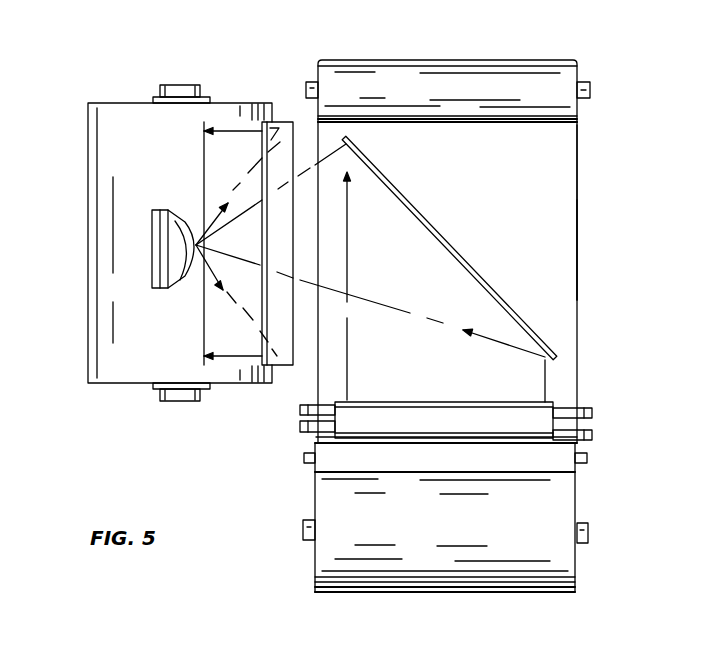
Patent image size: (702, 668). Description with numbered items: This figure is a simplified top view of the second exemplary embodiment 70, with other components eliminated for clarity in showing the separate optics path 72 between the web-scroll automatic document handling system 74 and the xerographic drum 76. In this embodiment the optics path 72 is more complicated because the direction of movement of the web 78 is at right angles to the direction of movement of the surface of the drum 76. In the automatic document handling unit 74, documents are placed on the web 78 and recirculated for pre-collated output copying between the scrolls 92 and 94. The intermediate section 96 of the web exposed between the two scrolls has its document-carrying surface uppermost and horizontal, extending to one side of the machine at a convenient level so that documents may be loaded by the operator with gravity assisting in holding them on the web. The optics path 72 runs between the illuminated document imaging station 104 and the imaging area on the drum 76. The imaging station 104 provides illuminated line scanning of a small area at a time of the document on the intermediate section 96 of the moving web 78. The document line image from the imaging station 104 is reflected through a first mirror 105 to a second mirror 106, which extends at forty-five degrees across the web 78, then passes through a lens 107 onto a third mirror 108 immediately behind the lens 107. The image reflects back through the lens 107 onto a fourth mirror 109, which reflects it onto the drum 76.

The embodiment 70 is at (290, 88).
The optics path 72 is at (347, 340).
The web-scroll automatic document handling system 74 is at (600, 318).
The xerographic drum 76 is at (110, 140).
The web 78 is at (563, 163).
The scroll 92 is at (555, 72).
The scroll 94 is at (565, 575).
The intermediate section of the web 96 is at (558, 208).
The illuminated document imaging station 104 is at (645, 432).
The first mirror 105 is at (470, 405).
The second mirror 106 is at (403, 193).
The lens 107 is at (198, 230).
The third mirror 108 is at (153, 262).
The fourth mirror 109 is at (290, 358).